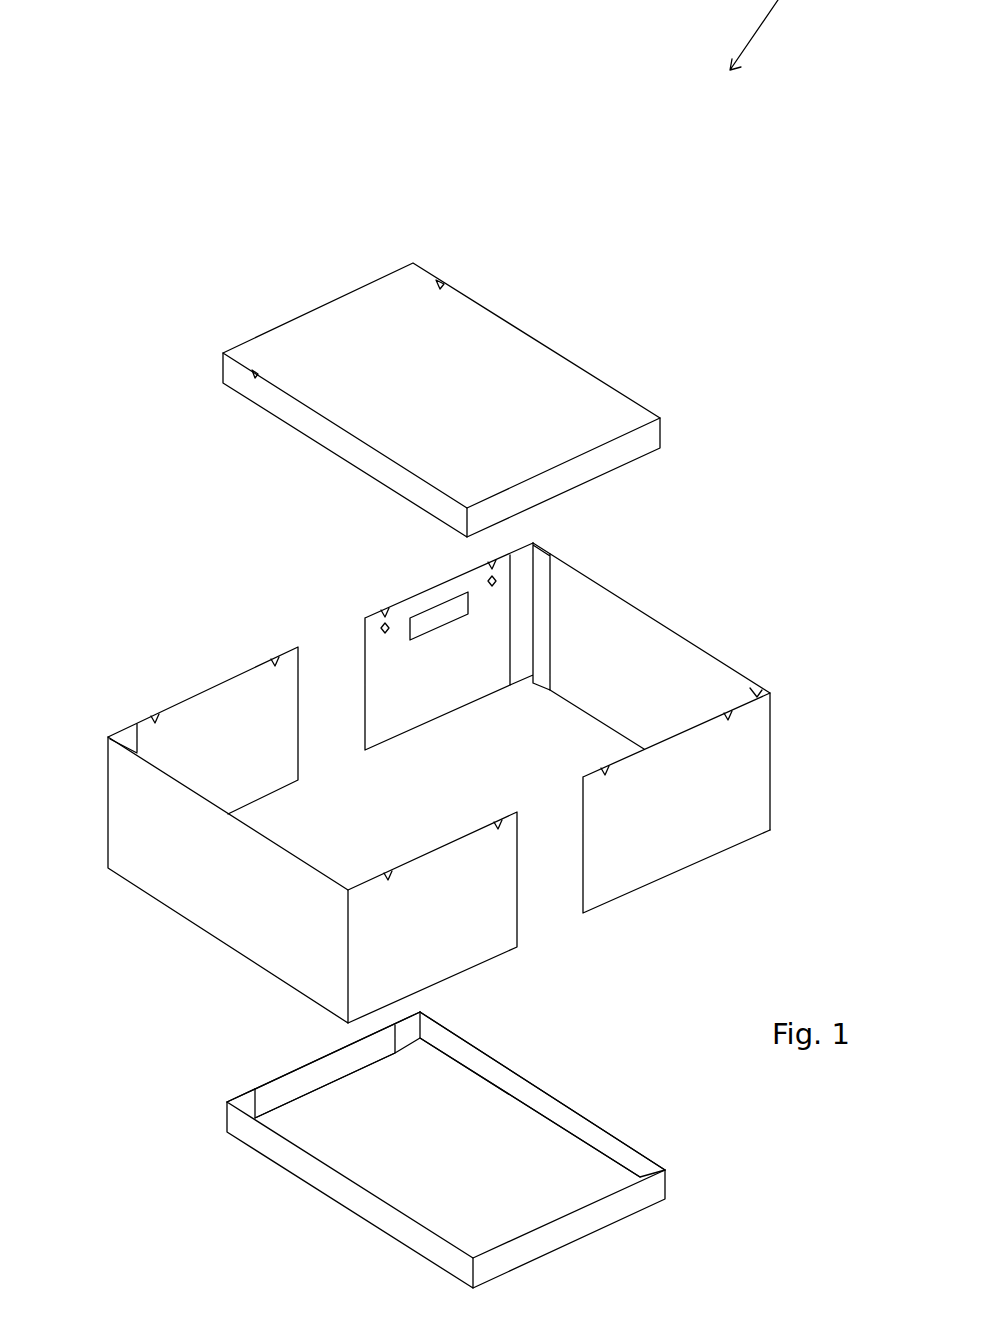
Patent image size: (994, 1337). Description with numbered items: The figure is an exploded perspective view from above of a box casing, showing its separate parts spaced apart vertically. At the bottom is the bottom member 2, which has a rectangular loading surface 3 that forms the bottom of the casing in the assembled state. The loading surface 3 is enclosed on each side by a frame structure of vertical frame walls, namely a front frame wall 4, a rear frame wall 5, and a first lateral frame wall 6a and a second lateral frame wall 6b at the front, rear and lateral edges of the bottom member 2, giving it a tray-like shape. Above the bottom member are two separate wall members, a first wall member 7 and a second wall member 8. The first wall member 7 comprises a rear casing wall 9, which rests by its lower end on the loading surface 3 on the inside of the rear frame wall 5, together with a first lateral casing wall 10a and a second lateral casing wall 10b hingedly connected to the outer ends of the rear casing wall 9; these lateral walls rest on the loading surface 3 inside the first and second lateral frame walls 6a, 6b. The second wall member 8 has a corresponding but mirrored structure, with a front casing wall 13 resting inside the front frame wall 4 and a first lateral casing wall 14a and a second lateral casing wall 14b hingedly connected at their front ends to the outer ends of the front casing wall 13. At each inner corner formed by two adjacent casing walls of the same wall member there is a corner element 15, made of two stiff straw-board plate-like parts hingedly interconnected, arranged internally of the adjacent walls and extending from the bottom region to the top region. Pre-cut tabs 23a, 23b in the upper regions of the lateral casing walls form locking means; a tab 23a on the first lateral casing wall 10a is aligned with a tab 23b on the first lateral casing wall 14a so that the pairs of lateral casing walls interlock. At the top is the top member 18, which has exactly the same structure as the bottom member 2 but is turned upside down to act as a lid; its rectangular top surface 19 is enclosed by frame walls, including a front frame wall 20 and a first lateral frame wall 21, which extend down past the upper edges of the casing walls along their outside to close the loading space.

The bottom member 2 is at (464, 1172).
The loading surface 3 is at (348, 1139).
The front frame wall 4 is at (377, 1208).
The rear frame wall 5 is at (516, 1088).
The first lateral frame wall 6a is at (573, 1225).
The second lateral frame wall 6b is at (308, 1077).
The first wall member 7 is at (597, 754).
The second wall member 8 is at (319, 810).
The rear casing wall 9 is at (677, 681).
The first lateral casing wall 10a is at (660, 853).
The second lateral casing wall 10b is at (432, 692).
The front casing wall 13 is at (135, 810).
The first lateral casing wall 14a is at (468, 932).
The second lateral casing wall 14b is at (223, 705).
The corner element 15 is at (127, 737).
The top member 18 is at (458, 383).
The top surface 19 is at (478, 303).
The front frame wall 20 is at (308, 420).
The first lateral frame wall 21 is at (623, 448).
The pre-cut tab 23a is at (605, 771).
The pre-cut tab 23b is at (388, 877).